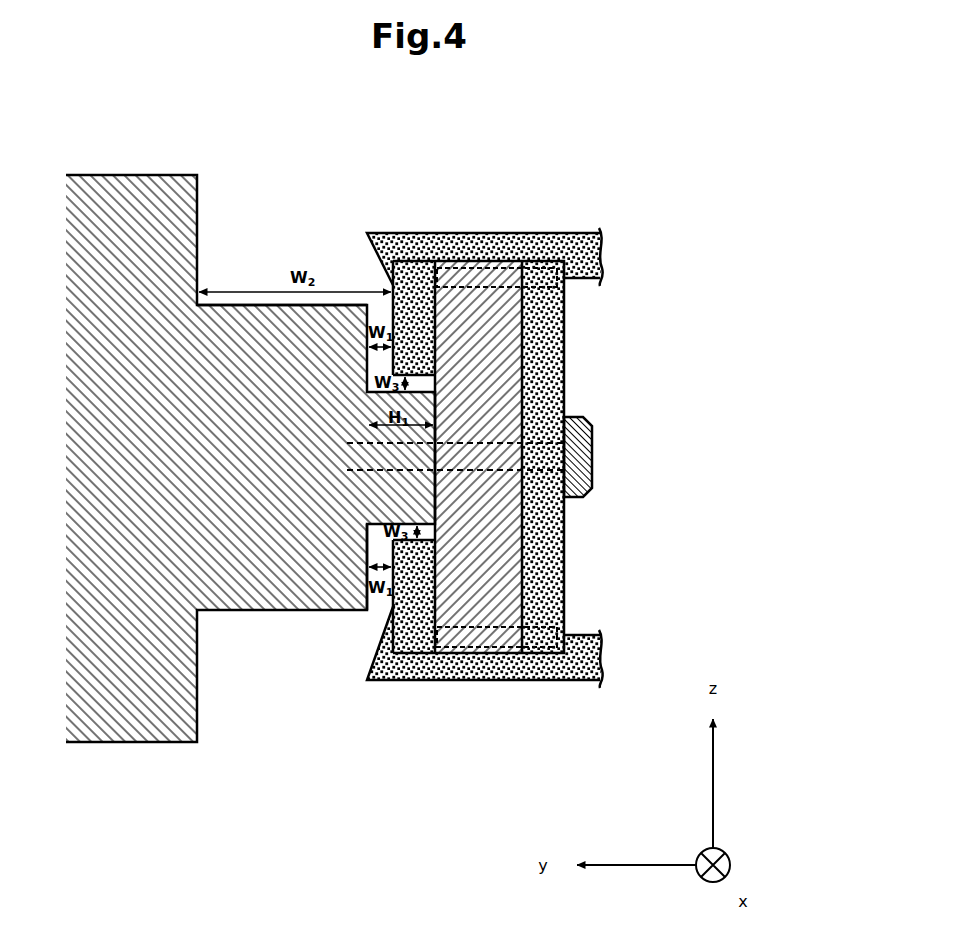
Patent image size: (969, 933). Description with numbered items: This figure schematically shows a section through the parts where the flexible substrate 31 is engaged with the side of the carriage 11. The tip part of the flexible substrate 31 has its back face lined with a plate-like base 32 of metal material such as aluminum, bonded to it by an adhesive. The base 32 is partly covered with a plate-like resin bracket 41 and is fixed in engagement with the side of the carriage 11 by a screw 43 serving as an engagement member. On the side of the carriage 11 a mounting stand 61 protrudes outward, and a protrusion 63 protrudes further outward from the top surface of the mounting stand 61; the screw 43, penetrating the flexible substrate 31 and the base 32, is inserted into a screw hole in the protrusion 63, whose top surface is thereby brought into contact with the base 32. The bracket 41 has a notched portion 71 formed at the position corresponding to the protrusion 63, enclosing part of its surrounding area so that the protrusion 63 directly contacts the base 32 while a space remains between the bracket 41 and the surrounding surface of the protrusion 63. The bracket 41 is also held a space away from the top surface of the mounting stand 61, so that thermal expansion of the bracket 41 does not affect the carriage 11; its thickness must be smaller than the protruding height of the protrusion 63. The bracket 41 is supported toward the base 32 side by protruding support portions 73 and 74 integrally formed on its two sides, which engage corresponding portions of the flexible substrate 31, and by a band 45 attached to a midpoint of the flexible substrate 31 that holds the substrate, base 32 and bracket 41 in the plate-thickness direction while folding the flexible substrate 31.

The carriage 11 is at (132, 190).
The flexible substrate 31 is at (552, 370).
The base 32 is at (510, 325).
The bracket 41 is at (392, 300).
The screw 43 is at (582, 453).
The band 45 is at (562, 247).
The mounting stand 61 is at (240, 307).
The protrusion 63 is at (365, 562).
The notched portion 71 is at (422, 383).
The support portion 73 is at (495, 267).
The support portion 74 is at (493, 645).